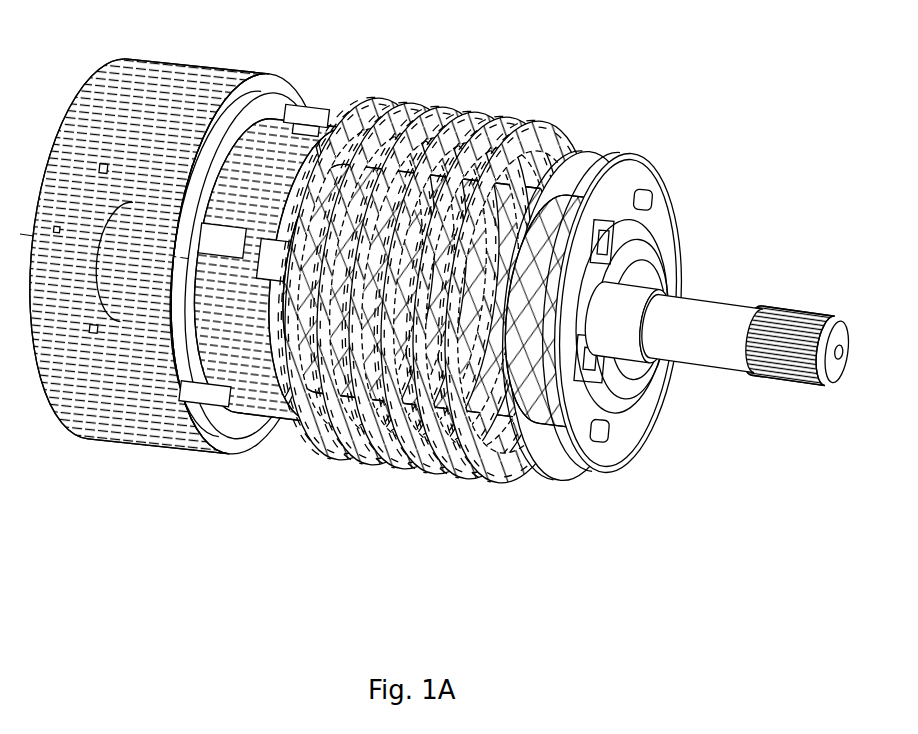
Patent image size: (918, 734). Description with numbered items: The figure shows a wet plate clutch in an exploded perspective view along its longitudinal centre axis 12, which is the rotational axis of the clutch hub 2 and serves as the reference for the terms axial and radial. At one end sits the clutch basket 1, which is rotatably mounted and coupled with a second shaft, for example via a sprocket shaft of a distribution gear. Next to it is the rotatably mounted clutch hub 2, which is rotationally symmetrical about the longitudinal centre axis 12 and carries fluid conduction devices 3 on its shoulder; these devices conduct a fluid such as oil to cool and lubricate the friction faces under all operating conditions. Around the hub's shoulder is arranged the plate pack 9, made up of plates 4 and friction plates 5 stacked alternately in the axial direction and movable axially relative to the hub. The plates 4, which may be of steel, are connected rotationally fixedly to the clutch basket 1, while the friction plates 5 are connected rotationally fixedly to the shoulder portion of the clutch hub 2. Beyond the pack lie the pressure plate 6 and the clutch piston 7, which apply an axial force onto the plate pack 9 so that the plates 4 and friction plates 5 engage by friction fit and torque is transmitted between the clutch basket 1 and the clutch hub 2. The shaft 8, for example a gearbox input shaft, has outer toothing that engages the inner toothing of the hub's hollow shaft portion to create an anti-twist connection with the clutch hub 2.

The clutch basket 1 is at (168, 81).
The clutch hub 2 is at (245, 180).
The fluid conduction devices 3 is at (291, 103).
The plates 4 is at (492, 113).
The friction plates 5 is at (533, 100).
The pressure plate 6 is at (456, 285).
The clutch piston 7 is at (633, 172).
The shaft 8 is at (737, 318).
The plate pack 9 is at (407, 477).
The longitudinal centre axis 12 is at (695, 333).